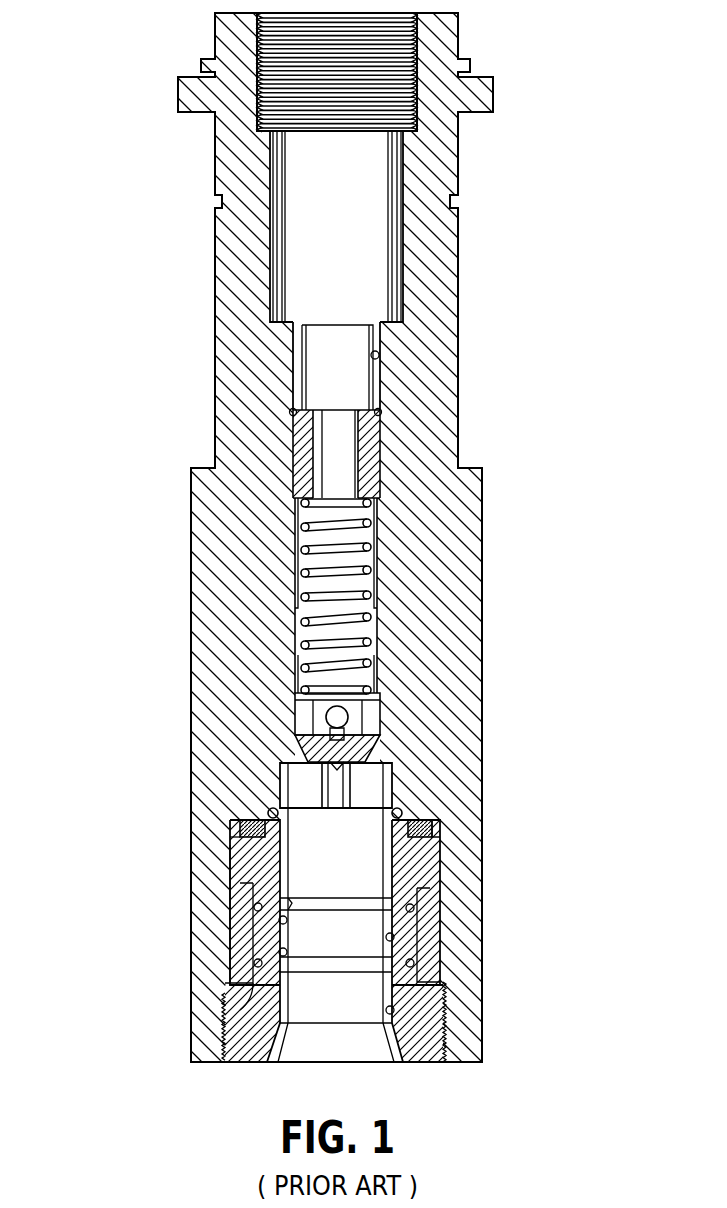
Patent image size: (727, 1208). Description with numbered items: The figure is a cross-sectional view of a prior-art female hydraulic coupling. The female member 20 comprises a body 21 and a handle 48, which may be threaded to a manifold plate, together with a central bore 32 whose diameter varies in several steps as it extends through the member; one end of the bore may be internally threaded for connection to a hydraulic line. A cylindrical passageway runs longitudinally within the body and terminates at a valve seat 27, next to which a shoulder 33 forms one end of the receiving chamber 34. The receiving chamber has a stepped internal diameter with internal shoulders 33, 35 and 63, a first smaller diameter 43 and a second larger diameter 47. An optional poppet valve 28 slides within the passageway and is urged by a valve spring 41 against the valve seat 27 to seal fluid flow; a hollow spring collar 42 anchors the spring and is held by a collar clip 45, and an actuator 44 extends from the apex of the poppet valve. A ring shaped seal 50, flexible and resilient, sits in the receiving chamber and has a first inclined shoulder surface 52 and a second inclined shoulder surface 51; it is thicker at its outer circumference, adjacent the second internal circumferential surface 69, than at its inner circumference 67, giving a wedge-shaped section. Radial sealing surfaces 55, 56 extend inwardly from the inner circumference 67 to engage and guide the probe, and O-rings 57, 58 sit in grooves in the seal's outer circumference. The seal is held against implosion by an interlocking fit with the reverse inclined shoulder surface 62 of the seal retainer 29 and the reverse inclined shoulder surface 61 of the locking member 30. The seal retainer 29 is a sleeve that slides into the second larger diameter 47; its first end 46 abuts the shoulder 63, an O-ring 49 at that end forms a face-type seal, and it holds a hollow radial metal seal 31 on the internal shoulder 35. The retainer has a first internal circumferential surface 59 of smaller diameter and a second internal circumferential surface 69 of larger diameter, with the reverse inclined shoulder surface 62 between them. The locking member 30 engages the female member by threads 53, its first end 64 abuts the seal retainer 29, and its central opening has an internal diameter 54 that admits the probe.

The female member 20 is at (180, 683).
The body 21 is at (208, 572).
The valve seat 27 is at (380, 722).
The poppet valve 28 is at (300, 742).
The seal retainer 29 is at (435, 883).
The locking member 30 is at (423, 1062).
The hollow radial metal seal 31 is at (280, 797).
The central bore 32 is at (379, 355).
The shoulder 33 is at (390, 780).
The receiving chamber 34 is at (362, 868).
The internal shoulder 35 is at (270, 810).
The valve spring 41 is at (301, 527).
The hollow spring collar 42 is at (298, 453).
The first smaller diameter 43 is at (401, 810).
The actuator 44 is at (330, 780).
The collar clip 45 is at (382, 412).
The first end 46 is at (435, 818).
The second larger diameter 47 is at (230, 862).
The handle 48 is at (215, 160).
The O-ring 49 is at (427, 828).
The ring shaped seal 50 is at (254, 907).
The second inclined shoulder surface 51 is at (240, 1003).
The first inclined shoulder surface 52 is at (283, 920).
The threads 53 is at (445, 1030).
The internal diameter 54 is at (394, 1010).
The radial sealing surface 55 is at (254, 963).
The radial sealing surface 56 is at (250, 930).
The O-ring 57 is at (414, 963).
The O-ring 58 is at (414, 908).
The first internal circumferential surface 59 is at (235, 848).
The reverse inclined shoulder surface 61 is at (281, 993).
The reverse inclined shoulder surface 62 is at (285, 882).
The shoulder 63 is at (243, 827).
The first end 64 is at (225, 992).
The inner circumference 67 is at (394, 937).
The second internal circumferential surface 69 is at (283, 953).